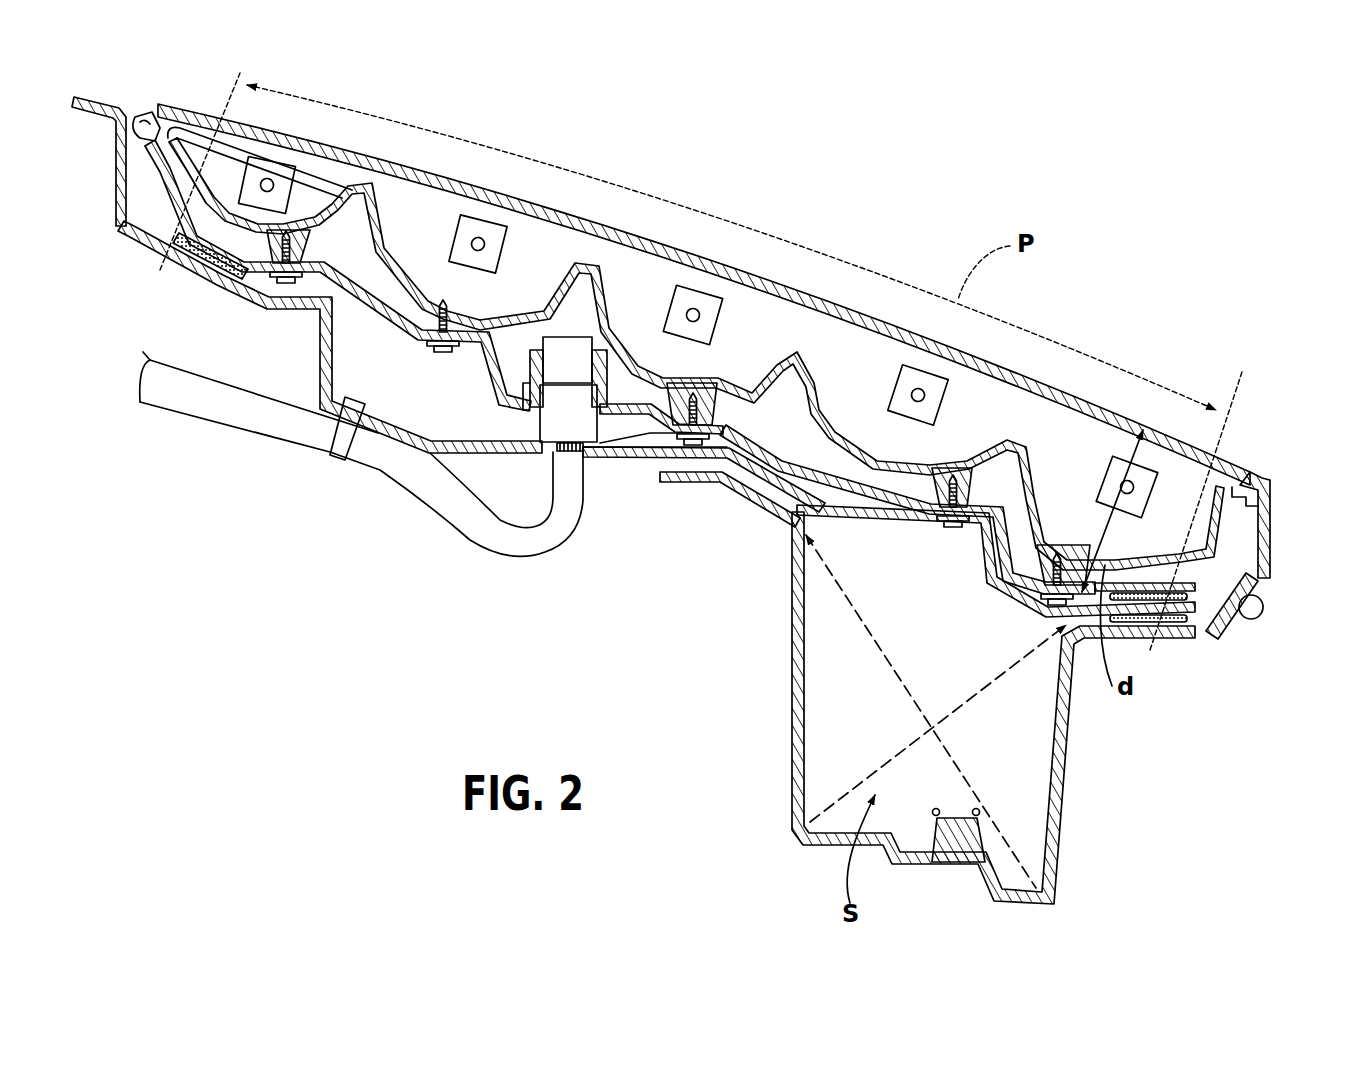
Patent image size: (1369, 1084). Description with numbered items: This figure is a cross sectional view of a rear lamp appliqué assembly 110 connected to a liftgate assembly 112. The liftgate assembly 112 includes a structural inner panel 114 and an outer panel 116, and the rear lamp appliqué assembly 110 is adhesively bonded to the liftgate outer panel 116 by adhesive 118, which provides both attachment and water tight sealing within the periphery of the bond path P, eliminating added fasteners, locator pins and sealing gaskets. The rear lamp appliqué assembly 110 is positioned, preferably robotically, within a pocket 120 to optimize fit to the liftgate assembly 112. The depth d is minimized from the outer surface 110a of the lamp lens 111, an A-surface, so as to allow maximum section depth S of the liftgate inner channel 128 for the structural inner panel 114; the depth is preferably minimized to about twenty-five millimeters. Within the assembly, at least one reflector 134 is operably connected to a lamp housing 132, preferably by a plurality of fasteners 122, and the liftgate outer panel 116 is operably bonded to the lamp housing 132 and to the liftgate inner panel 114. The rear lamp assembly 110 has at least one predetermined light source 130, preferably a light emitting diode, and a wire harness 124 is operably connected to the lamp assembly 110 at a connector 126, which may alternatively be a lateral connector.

The rear lamp appliqué assembly 110 is at (700, 197).
The outer surface 110a is at (1085, 394).
The lamp lens 111 is at (860, 318).
The liftgate assembly 112 is at (1145, 761).
The inner panel 114 is at (790, 716).
The outer panel 116 is at (318, 342).
The adhesive 118 is at (212, 257).
The pocket 120 is at (1270, 502).
The fasteners 122 is at (280, 278).
The wire harness 124 is at (505, 540).
The connector 126 is at (548, 452).
The liftgate inner channel 128 is at (1030, 770).
The light source 130 is at (945, 400).
The lamp housing 132 is at (793, 458).
The reflector 134 is at (838, 428).